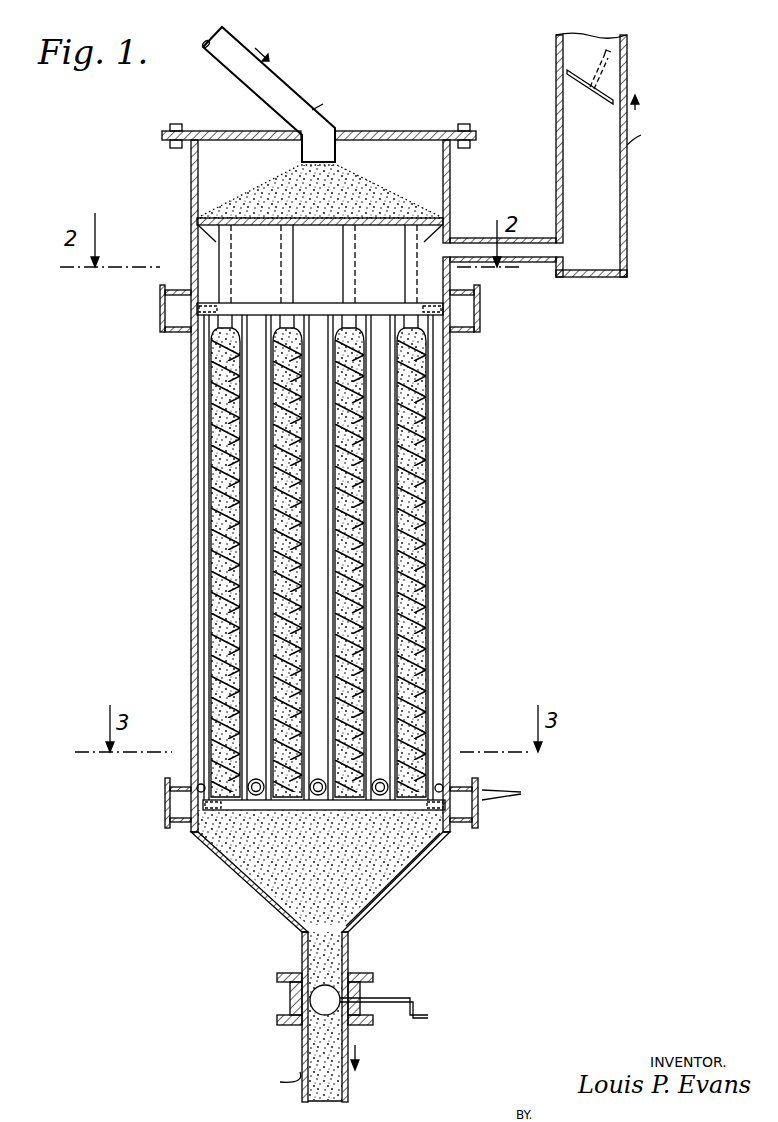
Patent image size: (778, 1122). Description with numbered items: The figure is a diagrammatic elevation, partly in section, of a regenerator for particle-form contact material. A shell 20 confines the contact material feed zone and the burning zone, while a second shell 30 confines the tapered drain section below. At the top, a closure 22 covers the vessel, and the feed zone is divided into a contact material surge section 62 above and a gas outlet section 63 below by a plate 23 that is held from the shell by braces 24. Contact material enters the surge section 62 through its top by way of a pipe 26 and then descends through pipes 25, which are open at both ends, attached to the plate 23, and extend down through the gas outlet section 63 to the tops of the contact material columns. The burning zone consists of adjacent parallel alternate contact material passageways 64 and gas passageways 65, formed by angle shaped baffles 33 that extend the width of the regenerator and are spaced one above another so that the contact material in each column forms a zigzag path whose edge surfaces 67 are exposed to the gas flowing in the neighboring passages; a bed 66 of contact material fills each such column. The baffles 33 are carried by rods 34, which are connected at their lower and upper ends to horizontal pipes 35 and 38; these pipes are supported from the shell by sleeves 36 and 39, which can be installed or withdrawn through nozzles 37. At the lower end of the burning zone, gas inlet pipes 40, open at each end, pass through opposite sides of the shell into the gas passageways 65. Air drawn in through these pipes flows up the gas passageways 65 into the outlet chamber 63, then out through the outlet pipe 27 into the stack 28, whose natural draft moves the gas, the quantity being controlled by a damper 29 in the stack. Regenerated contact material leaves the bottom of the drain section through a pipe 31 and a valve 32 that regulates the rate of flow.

The shell 20 is at (450, 497).
The top closure flange 22 is at (206, 130).
The plate 23 is at (446, 216).
The braces 24 is at (447, 233).
The pipes 25 is at (262, 248).
The pipe 26 is at (292, 92).
The outlet pipe 27 is at (540, 263).
The stack 28 is at (628, 186).
The damper 29 is at (575, 85).
The shell 30 is at (250, 887).
The pipe 31 is at (348, 952).
The valve 32 is at (292, 995).
The angle shaped baffles 33 is at (210, 558).
The rods 34 is at (250, 580).
The horizontal pipe 35 is at (278, 304).
The sleeves 36 is at (176, 310).
The nozzles 37 is at (178, 330).
The horizontal pipe 38 is at (410, 807).
The sleeves 39 is at (166, 805).
The gas inlet pipes 40 is at (262, 779).
The contact material surge section 62 is at (212, 180).
The gas outlet section 63 is at (205, 245).
The contact material passageways 64 is at (287, 393).
The gas passageways 65 is at (255, 625).
The contact material bed 66 is at (210, 425).
The edge surfaces 67 is at (425, 450).